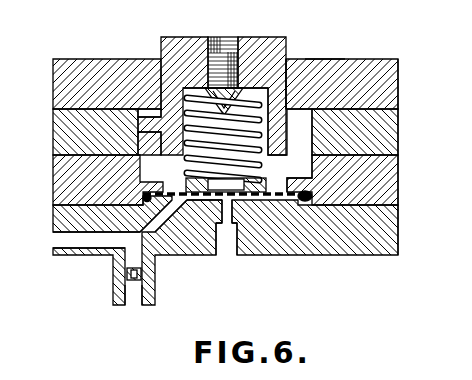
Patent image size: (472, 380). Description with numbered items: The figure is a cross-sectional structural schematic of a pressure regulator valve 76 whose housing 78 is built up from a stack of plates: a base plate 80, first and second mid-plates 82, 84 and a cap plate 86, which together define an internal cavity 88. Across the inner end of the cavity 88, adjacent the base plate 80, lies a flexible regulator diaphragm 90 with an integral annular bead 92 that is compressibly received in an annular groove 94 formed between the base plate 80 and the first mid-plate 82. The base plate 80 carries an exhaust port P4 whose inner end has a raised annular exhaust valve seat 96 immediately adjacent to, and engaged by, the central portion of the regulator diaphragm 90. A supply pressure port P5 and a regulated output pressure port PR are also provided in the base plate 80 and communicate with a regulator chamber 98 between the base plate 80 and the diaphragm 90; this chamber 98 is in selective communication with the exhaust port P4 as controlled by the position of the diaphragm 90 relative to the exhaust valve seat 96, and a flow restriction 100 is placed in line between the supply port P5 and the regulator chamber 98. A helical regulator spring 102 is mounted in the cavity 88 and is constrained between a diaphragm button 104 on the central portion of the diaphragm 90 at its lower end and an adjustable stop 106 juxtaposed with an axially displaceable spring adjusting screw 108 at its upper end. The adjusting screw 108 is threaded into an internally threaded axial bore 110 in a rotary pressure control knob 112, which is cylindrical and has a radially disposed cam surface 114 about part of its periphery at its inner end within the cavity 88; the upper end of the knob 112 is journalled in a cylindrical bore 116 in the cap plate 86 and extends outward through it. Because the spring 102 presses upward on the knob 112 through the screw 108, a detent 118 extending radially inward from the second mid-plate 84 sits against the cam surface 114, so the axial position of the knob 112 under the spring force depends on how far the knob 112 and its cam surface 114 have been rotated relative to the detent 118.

The pressure regulator valve 76 is at (65, 53).
The housing 78 is at (400, 98).
The base plate 80 is at (388, 225).
The first mid-plate 82 is at (388, 172).
The second mid-plate 84 is at (386, 125).
The cap plate 86 is at (379, 63).
The internal cavity 88 is at (299, 176).
The regulator diaphragm 90 is at (278, 196).
The annular bead 92 is at (316, 200).
The annular groove 94 is at (305, 201).
The exhaust valve seat 96 is at (237, 198).
The regulator chamber 98 is at (190, 201).
The flow restriction 100 is at (126, 275).
The regulator spring 102 is at (256, 143).
The diaphragm button 104 is at (188, 180).
The adjustable stop 106 is at (288, 78).
The spring adjusting screw 108 is at (247, 48).
The internally threaded axial bore 110 is at (218, 37).
The rotary pressure control knob 112 is at (157, 45).
The radial cam surface 114 is at (140, 143).
The cylindrical bore 116 is at (322, 60).
The detent 118 is at (139, 130).
The regulated output pressure port PR is at (50, 240).
The exhaust port P4 is at (229, 243).
The supply pressure port P5 is at (137, 303).